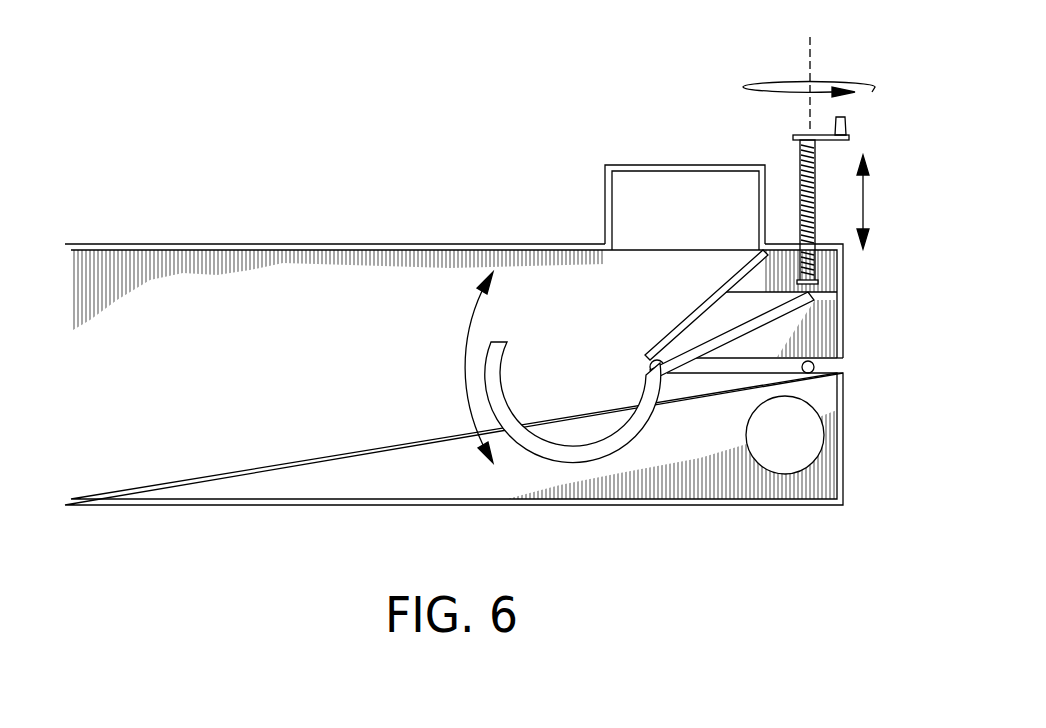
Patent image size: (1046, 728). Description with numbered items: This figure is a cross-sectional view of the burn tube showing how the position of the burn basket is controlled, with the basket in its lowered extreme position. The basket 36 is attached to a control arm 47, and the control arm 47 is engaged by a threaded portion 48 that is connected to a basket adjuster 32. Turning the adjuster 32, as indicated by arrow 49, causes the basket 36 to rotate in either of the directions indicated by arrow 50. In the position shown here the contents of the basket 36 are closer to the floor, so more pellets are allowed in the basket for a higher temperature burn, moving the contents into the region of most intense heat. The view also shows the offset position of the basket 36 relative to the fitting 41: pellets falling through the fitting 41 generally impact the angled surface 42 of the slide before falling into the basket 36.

The basket adjuster 32 is at (845, 122).
The basket 36 is at (513, 388).
The fitting 41 is at (605, 205).
The angled surface 42 is at (693, 313).
The control arm 47 is at (773, 323).
The threaded portion 48 is at (802, 172).
The arrow 49 is at (780, 82).
The arrow 50 is at (467, 350).